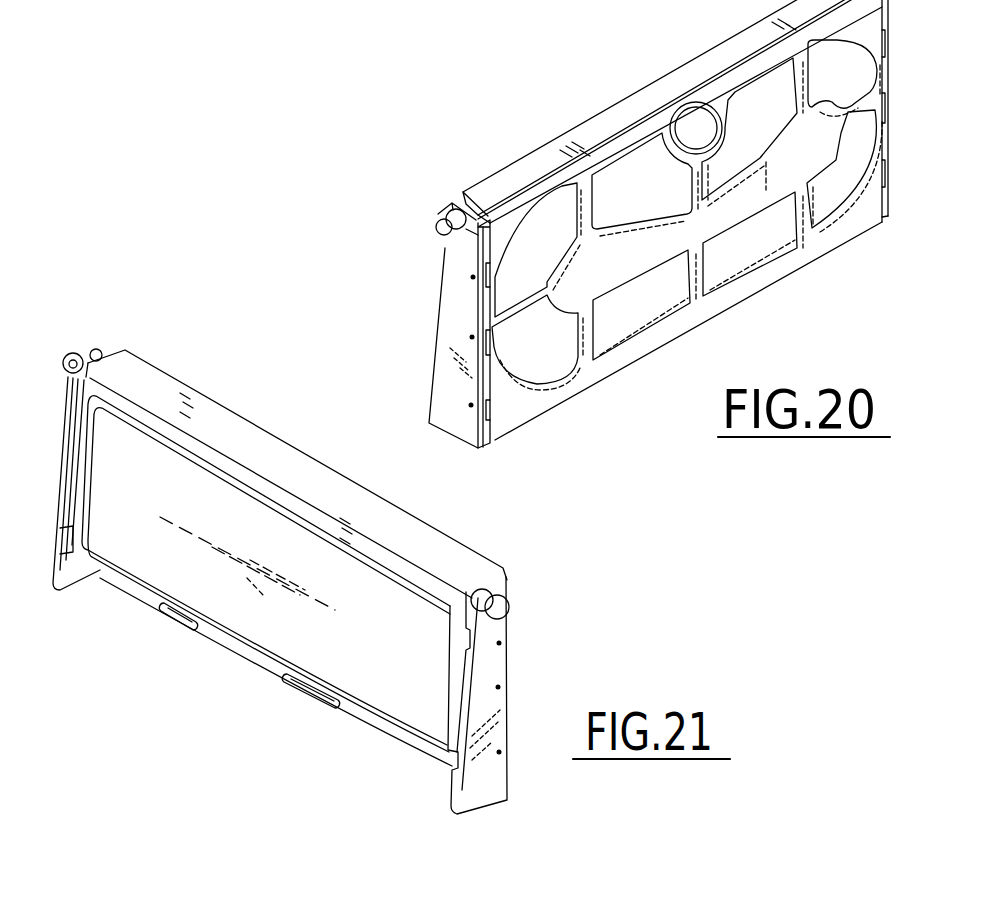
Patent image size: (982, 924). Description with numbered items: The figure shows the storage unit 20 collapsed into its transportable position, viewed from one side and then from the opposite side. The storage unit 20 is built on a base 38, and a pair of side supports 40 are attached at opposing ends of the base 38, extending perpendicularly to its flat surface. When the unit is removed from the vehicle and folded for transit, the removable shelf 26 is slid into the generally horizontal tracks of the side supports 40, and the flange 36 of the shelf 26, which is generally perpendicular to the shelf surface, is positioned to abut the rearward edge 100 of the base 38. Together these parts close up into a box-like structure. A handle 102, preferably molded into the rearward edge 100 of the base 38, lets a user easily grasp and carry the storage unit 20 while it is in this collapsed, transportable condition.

In FIG. 20, the storage unit 20 is at (605, 97).
In FIG. 21, the storage unit 20 is at (268, 388).
In FIG. 20, the removable shelf 26 is at (515, 157).
In FIG. 21, the removable shelf 26 is at (160, 623).
In FIG. 20, the flange 36 is at (462, 198).
In FIG. 21, the flange 36 is at (350, 490).
In FIG. 20, the base 38 is at (602, 385).
In FIG. 20, the side supports 40 is at (445, 325).
In FIG. 21, the side supports 40 is at (78, 577).
In FIG. 20, the rearward edge 100 is at (478, 238).
In FIG. 20, the handle 102 is at (690, 117).